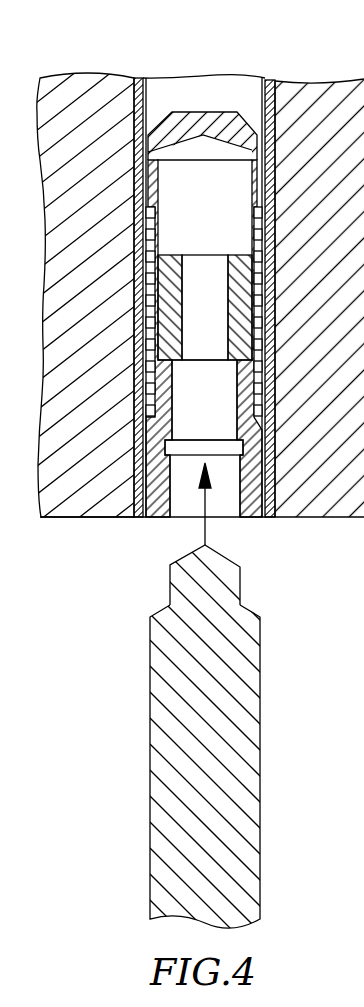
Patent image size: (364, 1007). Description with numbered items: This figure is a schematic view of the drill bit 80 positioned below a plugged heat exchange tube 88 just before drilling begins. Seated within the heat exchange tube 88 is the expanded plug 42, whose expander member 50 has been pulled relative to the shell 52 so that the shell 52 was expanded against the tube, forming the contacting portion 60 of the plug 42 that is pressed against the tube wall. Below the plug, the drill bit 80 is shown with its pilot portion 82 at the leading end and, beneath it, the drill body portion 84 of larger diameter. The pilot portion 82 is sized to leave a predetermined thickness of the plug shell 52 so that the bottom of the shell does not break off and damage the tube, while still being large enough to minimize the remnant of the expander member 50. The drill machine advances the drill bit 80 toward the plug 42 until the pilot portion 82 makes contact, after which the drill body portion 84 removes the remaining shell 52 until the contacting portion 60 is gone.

The plug 42 is at (187, 118).
The expander member 50 is at (250, 256).
The shell 52 is at (248, 318).
The contacting portion 60 is at (164, 270).
The drill bit 80 is at (253, 680).
The pilot portion 82 is at (237, 585).
The drill body portion 84 is at (160, 715).
The heat exchange tube 88 is at (137, 78).